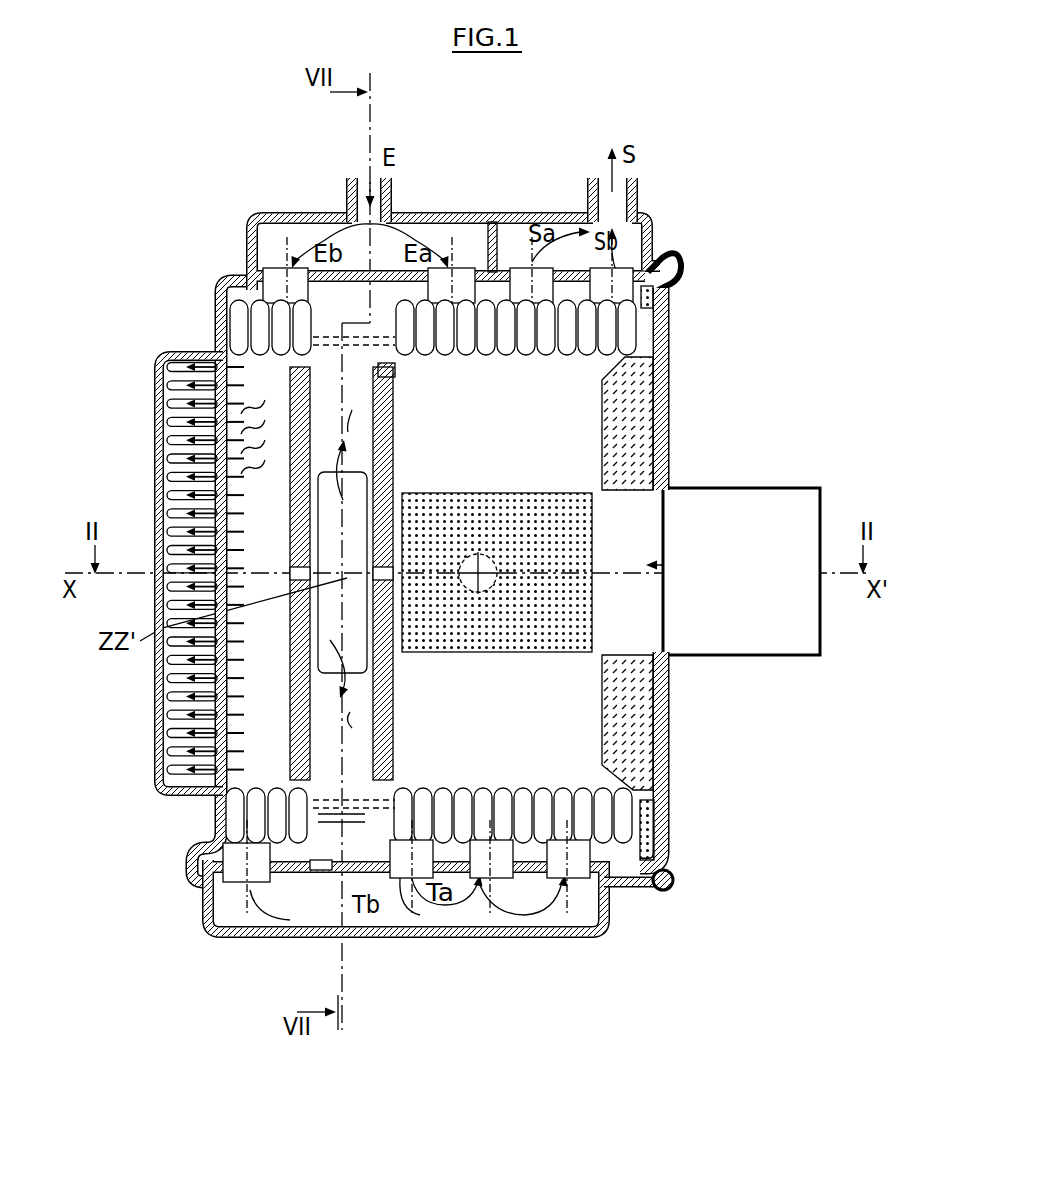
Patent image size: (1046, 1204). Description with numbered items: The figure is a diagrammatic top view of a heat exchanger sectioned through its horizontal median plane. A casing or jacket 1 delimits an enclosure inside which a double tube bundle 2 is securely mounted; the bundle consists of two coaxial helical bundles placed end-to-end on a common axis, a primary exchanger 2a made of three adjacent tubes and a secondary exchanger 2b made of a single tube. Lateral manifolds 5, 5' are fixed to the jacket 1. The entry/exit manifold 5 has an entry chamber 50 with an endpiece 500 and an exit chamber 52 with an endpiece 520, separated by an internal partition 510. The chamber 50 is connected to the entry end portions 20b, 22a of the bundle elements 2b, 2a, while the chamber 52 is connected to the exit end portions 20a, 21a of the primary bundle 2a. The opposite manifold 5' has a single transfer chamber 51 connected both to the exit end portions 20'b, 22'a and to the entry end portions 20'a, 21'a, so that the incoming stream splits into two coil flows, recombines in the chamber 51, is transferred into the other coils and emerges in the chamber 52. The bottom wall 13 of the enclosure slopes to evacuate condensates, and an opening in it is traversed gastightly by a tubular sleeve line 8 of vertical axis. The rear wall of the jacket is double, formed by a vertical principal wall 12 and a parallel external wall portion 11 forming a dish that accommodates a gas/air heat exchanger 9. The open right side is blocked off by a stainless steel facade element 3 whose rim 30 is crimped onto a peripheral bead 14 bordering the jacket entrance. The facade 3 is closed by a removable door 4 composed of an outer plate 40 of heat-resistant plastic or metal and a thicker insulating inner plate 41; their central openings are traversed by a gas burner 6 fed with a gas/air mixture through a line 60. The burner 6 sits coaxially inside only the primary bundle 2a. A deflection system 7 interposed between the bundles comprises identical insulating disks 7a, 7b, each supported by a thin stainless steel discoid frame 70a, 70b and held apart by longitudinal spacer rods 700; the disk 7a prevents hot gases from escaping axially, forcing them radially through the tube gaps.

The casing 1 is at (196, 268).
The double tube bundle 2 is at (537, 766).
The primary exchanger bundle 2a is at (466, 788).
The secondary exchanger bundle 2b is at (212, 836).
The facade element 3 is at (664, 850).
The removable door 4 is at (690, 750).
The entry/exit manifold 5 is at (451, 160).
The opposite manifold 5' is at (406, 966).
The burner 6 is at (538, 494).
The deflection system 7 is at (412, 468).
The deflection disk 7a is at (390, 444).
The deflection disk 7b is at (290, 548).
The line 8 is at (293, 647).
The gas/air heat exchanger 9 is at (170, 484).
The external wall portion 11 is at (155, 549).
The vertical principal wall 12 is at (166, 745).
The bottom wall of the enclosure 13 is at (477, 653).
The peripheral bead 14 is at (672, 886).
The exit end portion 20a is at (622, 293).
The entry end portion 20b is at (260, 273).
The entry end portion 20'a is at (604, 896).
The exit end portion 20'b is at (193, 885).
The exit end portion 21a is at (545, 290).
The entry end portion 21'a is at (519, 907).
The entry end portion 22a is at (463, 278).
The exit end portion 22'a is at (397, 902).
The rim 30 is at (676, 874).
The outer plate 40 is at (666, 372).
The inner plate 41 is at (630, 422).
The entry chamber 50 is at (300, 213).
The transfer chamber 51 is at (412, 938).
The exit chamber 52 is at (575, 212).
The line 60 is at (780, 656).
The discoid frame 70a is at (336, 802).
The discoid frame 70b is at (314, 795).
The endpiece 500 is at (392, 196).
The internal partition 510 is at (497, 242).
The endpiece 520 is at (641, 192).
The longitudinal rods 700 is at (395, 382).